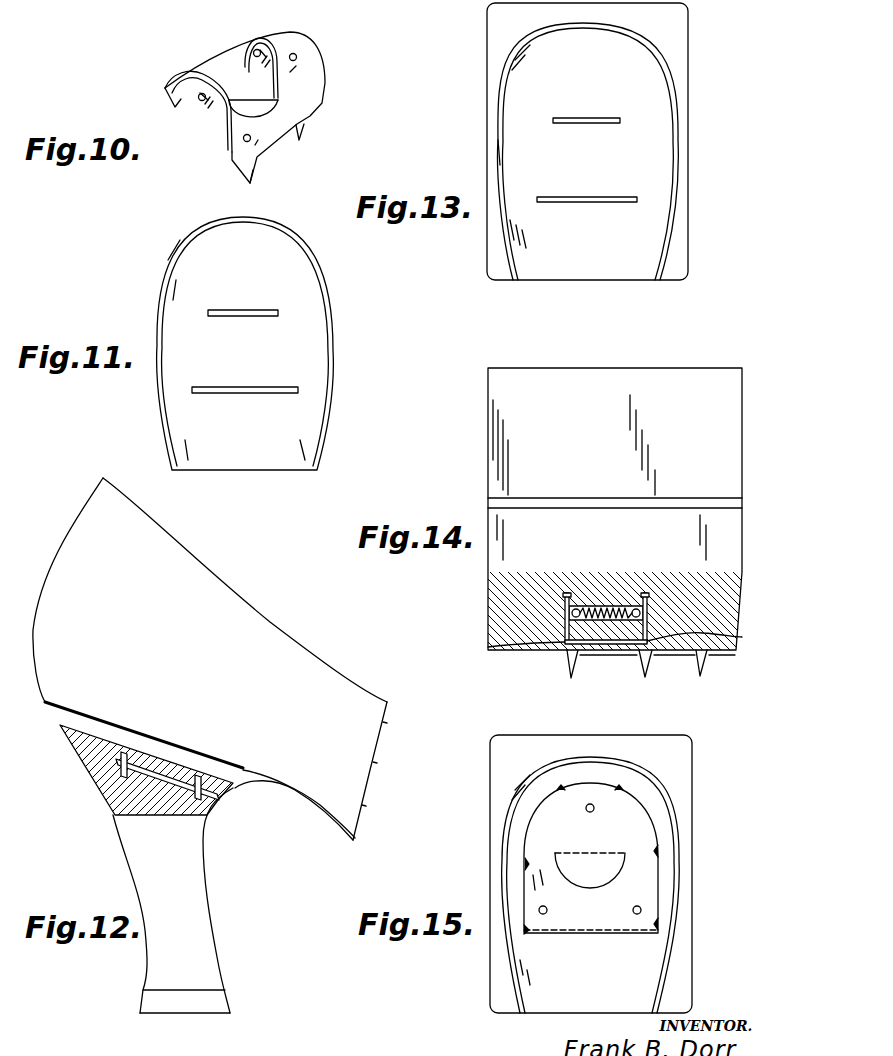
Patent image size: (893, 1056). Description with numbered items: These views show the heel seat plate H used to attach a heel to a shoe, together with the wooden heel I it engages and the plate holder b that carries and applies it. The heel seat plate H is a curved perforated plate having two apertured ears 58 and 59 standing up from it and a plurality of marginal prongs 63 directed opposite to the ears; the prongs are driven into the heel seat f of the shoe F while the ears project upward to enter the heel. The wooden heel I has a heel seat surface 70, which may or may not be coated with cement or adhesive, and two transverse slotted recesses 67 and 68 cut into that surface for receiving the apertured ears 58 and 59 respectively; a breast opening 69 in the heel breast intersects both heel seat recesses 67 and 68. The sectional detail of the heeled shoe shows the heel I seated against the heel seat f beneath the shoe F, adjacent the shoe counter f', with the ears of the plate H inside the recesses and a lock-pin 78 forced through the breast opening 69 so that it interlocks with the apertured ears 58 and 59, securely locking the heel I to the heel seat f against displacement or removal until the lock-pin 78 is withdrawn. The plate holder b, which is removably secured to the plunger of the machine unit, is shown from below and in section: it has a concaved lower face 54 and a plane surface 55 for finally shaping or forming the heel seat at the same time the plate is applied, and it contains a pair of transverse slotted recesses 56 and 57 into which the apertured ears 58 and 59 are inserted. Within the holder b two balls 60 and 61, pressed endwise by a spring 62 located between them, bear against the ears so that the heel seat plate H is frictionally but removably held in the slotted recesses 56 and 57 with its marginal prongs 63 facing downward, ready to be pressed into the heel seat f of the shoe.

In FIG. 13, the concaved lower face 54 is at (588, 151).
In FIG. 14, the concaved lower face 54 is at (527, 650).
In FIG. 15, the concaved lower face 54 is at (515, 847).
In FIG. 13, the plane surface 55 is at (499, 152).
In FIG. 15, the plane surface 55 is at (503, 868).
In FIG. 13, the transverse slotted recess 56 is at (591, 202).
In FIG. 14, the transverse slotted recess 56 is at (565, 603).
In FIG. 15, the transverse slotted recess 56 is at (560, 933).
In FIG. 13, the transverse slotted recess 57 is at (588, 118).
In FIG. 14, the transverse slotted recess 57 is at (647, 600).
In FIG. 15, the transverse slotted recess 57 is at (662, 838).
In FIG. 10, the apertured ear 58 is at (212, 112).
In FIG. 14, the apertured ear 58 is at (560, 635).
In FIG. 15, the apertured ear 58 is at (597, 933).
In FIG. 12, the apertured ear 58 is at (225, 792).
In FIG. 10, the apertured ear 59 is at (267, 53).
In FIG. 14, the apertured ear 59 is at (647, 626).
In FIG. 15, the apertured ear 59 is at (592, 853).
In FIG. 12, the apertured ear 59 is at (117, 758).
In FIG. 14, the ball 60 is at (573, 608).
In FIG. 14, the ball 61 is at (639, 608).
In FIG. 14, the spring 62 is at (604, 610).
In FIG. 10, the marginal prongs 63 is at (302, 133).
In FIG. 14, the marginal prongs 63 is at (700, 665).
In FIG. 15, the marginal prongs 63 is at (619, 787).
In FIG. 11, the transverse slotted recess 67 is at (248, 393).
In FIG. 12, the transverse slotted recess 67 is at (199, 798).
In FIG. 11, the transverse slotted recess 68 is at (241, 310).
In FIG. 12, the transverse slotted recess 68 is at (122, 775).
In FIG. 12, the breast opening 69 is at (207, 833).
In FIG. 11, the heel seat surface 70 is at (248, 348).
In FIG. 12, the lock-pin 78 is at (168, 812).
In FIG. 10, the heel seat plate H is at (307, 108).
In FIG. 14, the heel seat plate H is at (700, 636).
In FIG. 15, the heel seat plate H is at (640, 832).
In FIG. 11, the wooden heel I is at (332, 343).
In FIG. 12, the wooden heel I is at (205, 893).
In FIG. 13, the plate holder b is at (688, 135).
In FIG. 14, the plate holder b is at (742, 508).
In FIG. 15, the plate holder b is at (690, 793).
In FIG. 12, the shoe F is at (378, 740).
In FIG. 12, the heel seat f is at (144, 727).
In FIG. 12, the shoe counter f' is at (260, 772).